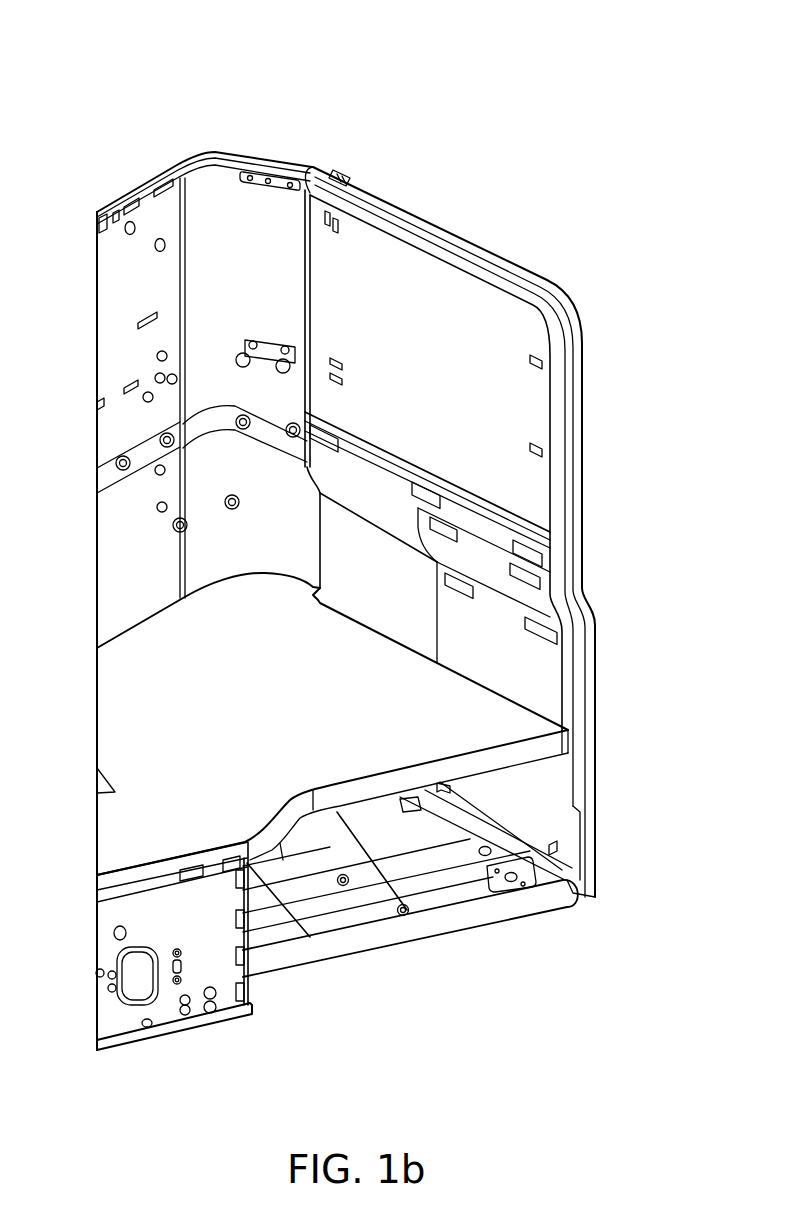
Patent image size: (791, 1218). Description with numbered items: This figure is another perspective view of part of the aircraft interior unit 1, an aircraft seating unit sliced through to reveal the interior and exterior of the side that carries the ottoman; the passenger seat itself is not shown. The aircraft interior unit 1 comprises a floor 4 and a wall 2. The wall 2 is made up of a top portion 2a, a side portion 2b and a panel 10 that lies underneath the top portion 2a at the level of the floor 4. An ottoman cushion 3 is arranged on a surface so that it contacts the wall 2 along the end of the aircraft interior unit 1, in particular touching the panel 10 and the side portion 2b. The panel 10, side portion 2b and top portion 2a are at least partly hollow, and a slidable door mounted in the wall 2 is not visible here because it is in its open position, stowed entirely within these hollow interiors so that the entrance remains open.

The aircraft interior unit 1 is at (497, 126).
The wall 2 is at (621, 357).
The top portion 2a is at (437, 387).
The side portion 2b is at (392, 607).
The ottoman cushion 3 is at (418, 722).
The floor 4 is at (365, 857).
The panel 10 is at (527, 800).